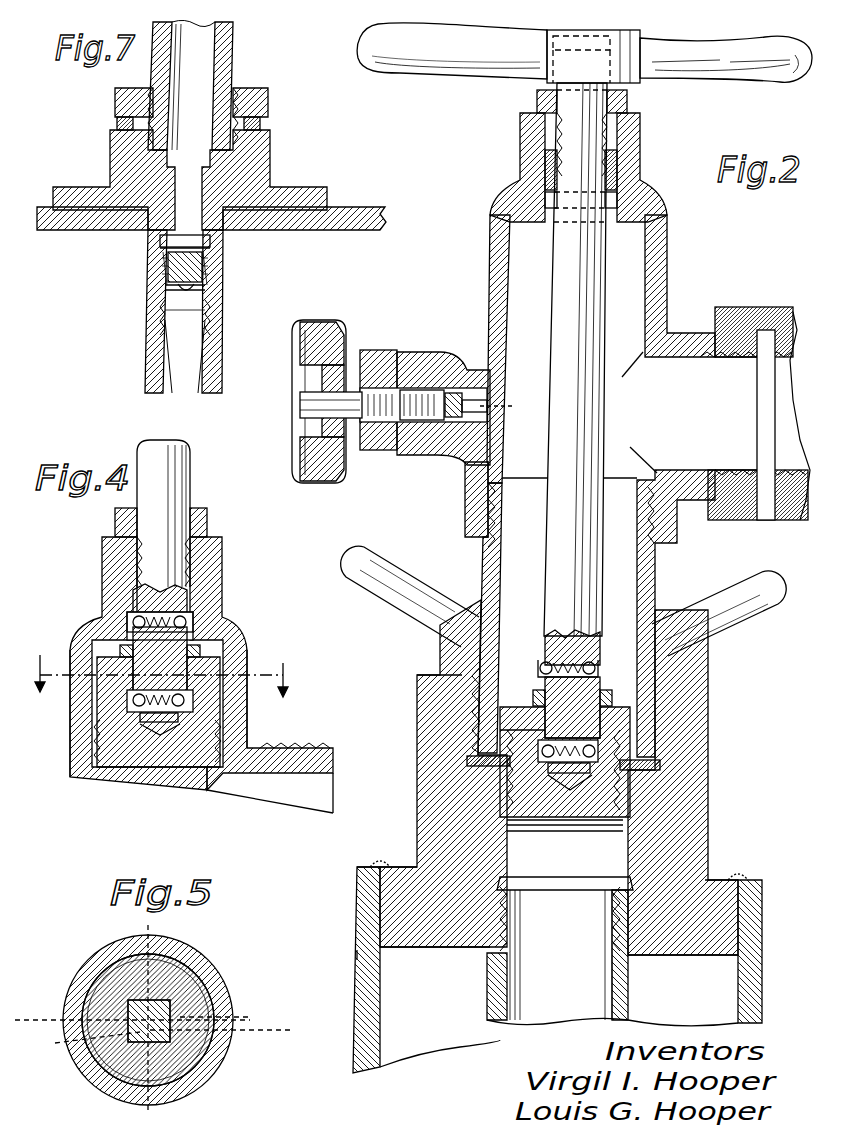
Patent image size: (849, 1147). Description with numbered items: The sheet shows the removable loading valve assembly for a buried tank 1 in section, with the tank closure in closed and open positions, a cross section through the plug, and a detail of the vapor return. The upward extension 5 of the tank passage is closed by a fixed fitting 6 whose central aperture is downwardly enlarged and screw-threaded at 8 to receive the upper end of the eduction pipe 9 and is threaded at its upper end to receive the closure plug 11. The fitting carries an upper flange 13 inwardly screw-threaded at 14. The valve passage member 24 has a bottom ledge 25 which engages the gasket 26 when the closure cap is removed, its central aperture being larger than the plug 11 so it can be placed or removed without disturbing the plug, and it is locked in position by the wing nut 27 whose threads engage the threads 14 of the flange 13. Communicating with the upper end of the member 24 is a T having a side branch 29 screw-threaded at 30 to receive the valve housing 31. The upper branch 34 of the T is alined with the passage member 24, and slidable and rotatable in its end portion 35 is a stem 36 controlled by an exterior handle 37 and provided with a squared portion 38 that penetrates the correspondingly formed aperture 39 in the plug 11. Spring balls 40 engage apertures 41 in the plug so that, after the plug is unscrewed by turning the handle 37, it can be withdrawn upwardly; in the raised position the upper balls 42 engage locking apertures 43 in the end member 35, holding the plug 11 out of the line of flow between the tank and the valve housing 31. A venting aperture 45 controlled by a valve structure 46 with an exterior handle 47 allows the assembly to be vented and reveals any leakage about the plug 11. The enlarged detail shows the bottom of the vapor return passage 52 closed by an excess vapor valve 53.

In FIG. 7, the buried tank 1 is at (338, 220).
In FIG. 2, the upward extension 5 is at (358, 952).
In FIG. 4, the upward extension 5 is at (160, 660).
In FIG. 2, the fixed fitting 6 is at (700, 897).
In FIG. 2, the downwardly enlarged portion of aperture 8 is at (628, 940).
In FIG. 2, the eduction pipe 9 is at (628, 993).
In FIG. 2, the closure plug 11 is at (607, 727).
In FIG. 4, the closure plug 11 is at (185, 745).
In FIG. 5, the closure plug 11 is at (180, 1058).
In FIG. 2, the upper flange 13 is at (432, 687).
In FIG. 2, the screw threads of flange 14 is at (466, 718).
In FIG. 2, the valve passage member 24 is at (652, 569).
In FIG. 2, the bottom ledge 25 is at (660, 757).
In FIG. 2, the gasket 26 is at (473, 760).
In FIG. 2, the wing nut 27 is at (673, 668).
In FIG. 2, the side branch 29 is at (677, 338).
In FIG. 4, the side branch 29 is at (270, 768).
In FIG. 2, the screw threads of side branch 30 is at (727, 330).
In FIG. 4, the screw threads of side branch 30 is at (312, 765).
In FIG. 2, the valve housing 31 is at (773, 318).
In FIG. 2, the upper branch of T 34 is at (660, 263).
In FIG. 4, the upper branch of T 34 is at (240, 745).
In FIG. 5, the upper branch of T 34 is at (197, 960).
In FIG. 2, the end portion 35 is at (628, 188).
In FIG. 4, the end portion 35 is at (215, 590).
In FIG. 2, the stem 36 is at (565, 280).
In FIG. 4, the stem 36 is at (180, 492).
In FIG. 2, the exterior handle 37 is at (472, 52).
In FIG. 2, the squared portion 38 is at (557, 713).
In FIG. 4, the squared portion 38 is at (160, 660).
In FIG. 5, the squared portion 38 is at (172, 1005).
In FIG. 2, the squared aperture 39 is at (540, 731).
In FIG. 5, the squared aperture 39 is at (172, 1036).
In FIG. 2, the spring balls 40 is at (581, 760).
In FIG. 4, the spring balls 40 is at (186, 700).
In FIG. 5, the spring balls 40 is at (163, 1025).
In FIG. 2, the apertures in plug 41 is at (543, 757).
In FIG. 4, the apertures in plug 41 is at (180, 706).
In FIG. 5, the apertures in plug 41 is at (149, 1028).
In FIG. 2, the upper balls 42 is at (541, 664).
In FIG. 4, the upper balls 42 is at (188, 625).
In FIG. 2, the locking apertures 43 is at (615, 202).
In FIG. 4, the locking apertures 43 is at (210, 612).
In FIG. 2, the venting aperture 45 is at (500, 406).
In FIG. 2, the venting valve structure 46 is at (446, 392).
In FIG. 2, the exterior handle of vent valve 47 is at (340, 348).
In FIG. 7, the vapor return passage 52 is at (222, 53).
In FIG. 7, the excess vapor valve 53 is at (160, 236).